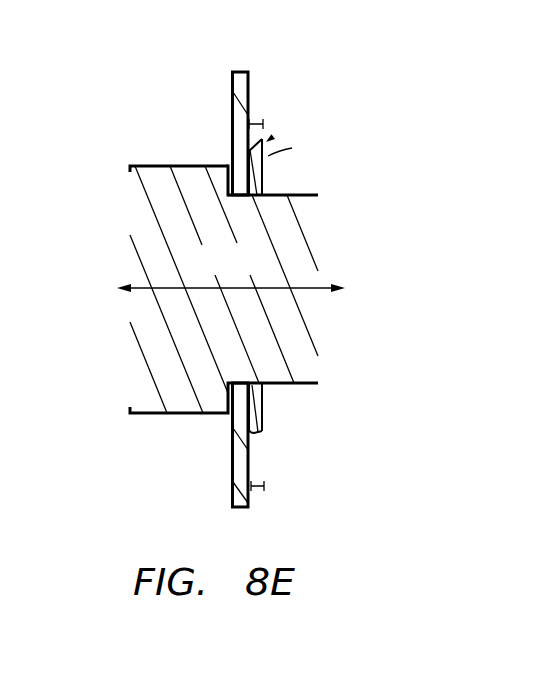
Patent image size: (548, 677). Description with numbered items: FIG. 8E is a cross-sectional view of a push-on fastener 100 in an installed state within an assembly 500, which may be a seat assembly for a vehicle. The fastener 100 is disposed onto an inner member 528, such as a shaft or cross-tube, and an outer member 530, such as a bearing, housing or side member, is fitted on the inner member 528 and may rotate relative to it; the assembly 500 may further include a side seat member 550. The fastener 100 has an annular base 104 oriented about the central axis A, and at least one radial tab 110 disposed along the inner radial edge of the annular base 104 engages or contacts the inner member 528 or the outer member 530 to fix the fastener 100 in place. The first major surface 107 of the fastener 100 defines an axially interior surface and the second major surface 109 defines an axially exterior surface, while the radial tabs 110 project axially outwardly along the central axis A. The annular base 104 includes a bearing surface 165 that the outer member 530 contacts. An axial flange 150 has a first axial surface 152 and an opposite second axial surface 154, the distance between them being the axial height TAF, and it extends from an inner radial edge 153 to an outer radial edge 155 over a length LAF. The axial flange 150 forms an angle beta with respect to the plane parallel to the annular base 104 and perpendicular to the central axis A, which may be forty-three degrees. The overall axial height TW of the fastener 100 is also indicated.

The assembly 500 is at (318, 45).
The push-on fastener 100 is at (264, 416).
The annular base 104 is at (248, 160).
The first major surface 107 is at (247, 177).
The second major surface 109 is at (262, 170).
The radial tab 110 is at (256, 186).
The axial flange 150 is at (258, 436).
The first axial surface 152 is at (250, 460).
The inner radial edge 153 is at (263, 153).
The second axial surface 154 is at (264, 433).
The outer radial edge 155 is at (260, 147).
The bearing surface 165 is at (249, 412).
The inner member 528 is at (241, 293).
The outer member 530 is at (230, 402).
The side seat member 550 is at (236, 72).
The central axis A is at (305, 290).
The axial height of the axial flange TAF is at (256, 122).
The length of the axial flange LAF is at (270, 140).
The axial height of the push-on fastener TW is at (258, 488).
The angle β beta is at (291, 145).